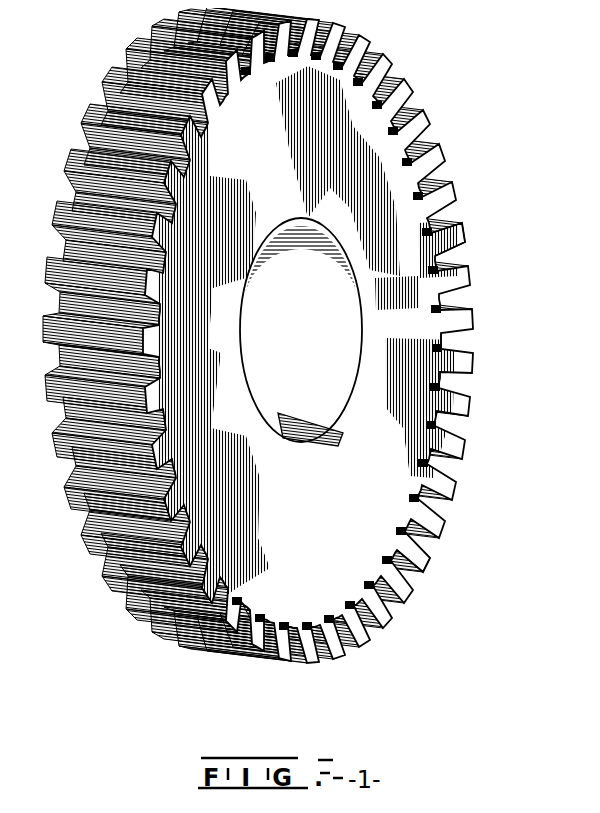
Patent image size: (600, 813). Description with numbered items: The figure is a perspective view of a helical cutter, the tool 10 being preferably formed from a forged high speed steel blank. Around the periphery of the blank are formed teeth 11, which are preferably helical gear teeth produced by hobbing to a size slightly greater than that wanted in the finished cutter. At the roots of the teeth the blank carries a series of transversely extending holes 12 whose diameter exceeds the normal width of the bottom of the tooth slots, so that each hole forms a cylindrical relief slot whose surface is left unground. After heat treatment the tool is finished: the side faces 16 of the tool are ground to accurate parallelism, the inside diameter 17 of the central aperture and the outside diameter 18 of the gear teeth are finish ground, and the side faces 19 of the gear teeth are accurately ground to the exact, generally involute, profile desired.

The tool 10 is at (380, 440).
The teeth 11 is at (448, 240).
The holes 12 is at (436, 345).
The side faces 16 is at (375, 468).
The inside diameter 17 is at (356, 325).
The outside diameter 18 is at (410, 570).
The side faces of the gear teeth 19 is at (102, 112).